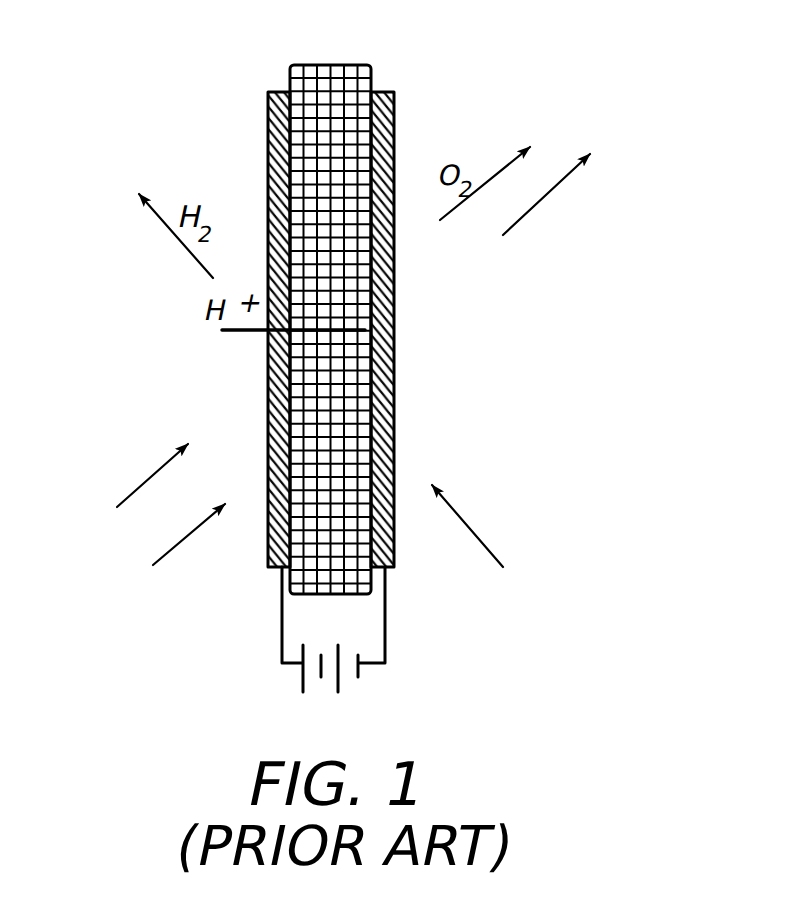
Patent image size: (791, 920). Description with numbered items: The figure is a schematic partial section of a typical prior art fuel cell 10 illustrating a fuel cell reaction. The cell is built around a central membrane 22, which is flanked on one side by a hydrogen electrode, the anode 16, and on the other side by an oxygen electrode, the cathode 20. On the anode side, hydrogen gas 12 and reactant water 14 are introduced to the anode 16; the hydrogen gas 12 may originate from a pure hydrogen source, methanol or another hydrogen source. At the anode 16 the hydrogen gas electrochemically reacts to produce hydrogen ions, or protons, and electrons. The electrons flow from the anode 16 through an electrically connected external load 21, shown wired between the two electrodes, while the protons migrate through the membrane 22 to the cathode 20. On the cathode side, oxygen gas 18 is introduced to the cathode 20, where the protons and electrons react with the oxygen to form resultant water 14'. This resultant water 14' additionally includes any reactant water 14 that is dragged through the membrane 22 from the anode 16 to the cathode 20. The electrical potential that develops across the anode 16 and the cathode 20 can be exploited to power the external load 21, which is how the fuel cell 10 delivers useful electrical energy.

The fuel cell 10 is at (380, 346).
The hydrogen gas 12 is at (170, 551).
The reactant water 14 is at (130, 485).
The resultant water 14' is at (586, 185).
The hydrogen electrode (anode) 16 is at (287, 95).
The oxygen gas 18 is at (503, 567).
The oxygen electrode (cathode) 20 is at (391, 93).
The external load 21 is at (386, 626).
The membrane 22 is at (326, 65).